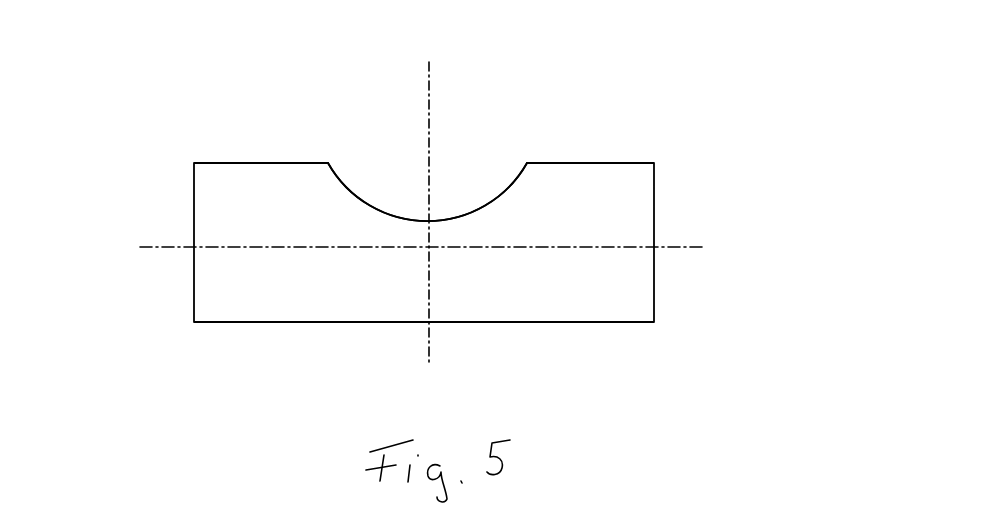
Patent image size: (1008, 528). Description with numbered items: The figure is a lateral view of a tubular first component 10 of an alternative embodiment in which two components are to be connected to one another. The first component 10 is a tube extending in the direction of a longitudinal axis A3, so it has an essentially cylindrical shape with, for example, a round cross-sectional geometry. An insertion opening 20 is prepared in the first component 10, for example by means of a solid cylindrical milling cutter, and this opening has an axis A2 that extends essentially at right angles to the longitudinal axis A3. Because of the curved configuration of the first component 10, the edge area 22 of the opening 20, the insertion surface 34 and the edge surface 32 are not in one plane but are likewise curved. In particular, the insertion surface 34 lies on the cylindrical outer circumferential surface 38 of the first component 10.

The first component 10 is at (830, 117).
The insertion opening 20 is at (600, 67).
The edge area 22 is at (528, 163).
The edge surface 32 is at (352, 192).
The insertion surface 34 is at (382, 216).
The cylindrical outer circumferential surface 38 is at (642, 303).
The axis of the insertion opening A2 is at (497, 40).
The longitudinal axis A3 is at (108, 287).